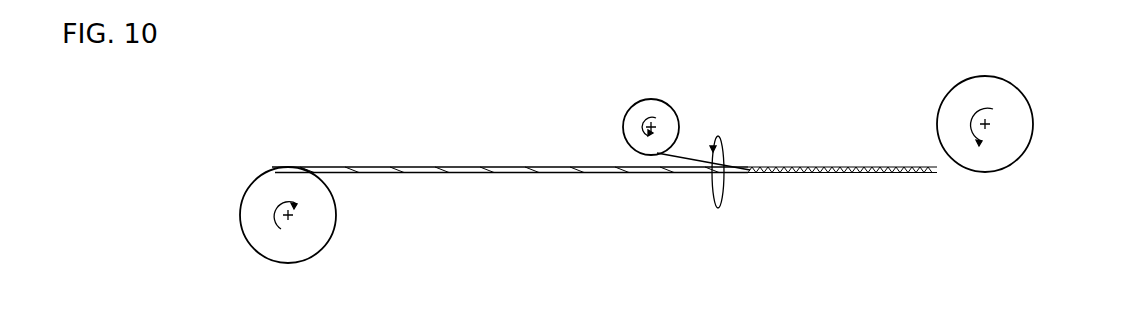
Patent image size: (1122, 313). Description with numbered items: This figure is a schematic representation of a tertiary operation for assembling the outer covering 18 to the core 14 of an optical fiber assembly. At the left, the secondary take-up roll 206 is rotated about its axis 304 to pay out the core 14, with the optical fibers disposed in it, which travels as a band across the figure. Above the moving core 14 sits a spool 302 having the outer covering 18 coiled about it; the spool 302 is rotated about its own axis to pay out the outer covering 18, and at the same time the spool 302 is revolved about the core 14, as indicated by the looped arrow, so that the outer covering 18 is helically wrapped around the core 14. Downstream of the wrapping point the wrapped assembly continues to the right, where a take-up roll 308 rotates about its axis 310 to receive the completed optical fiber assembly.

The core 14 is at (452, 162).
The outer covering 18 is at (687, 154).
The second take-up roll 206 is at (334, 230).
The spool 302 is at (670, 107).
The axis 304 is at (293, 213).
The take-up roll 308 is at (1033, 110).
The axis 310 is at (986, 126).